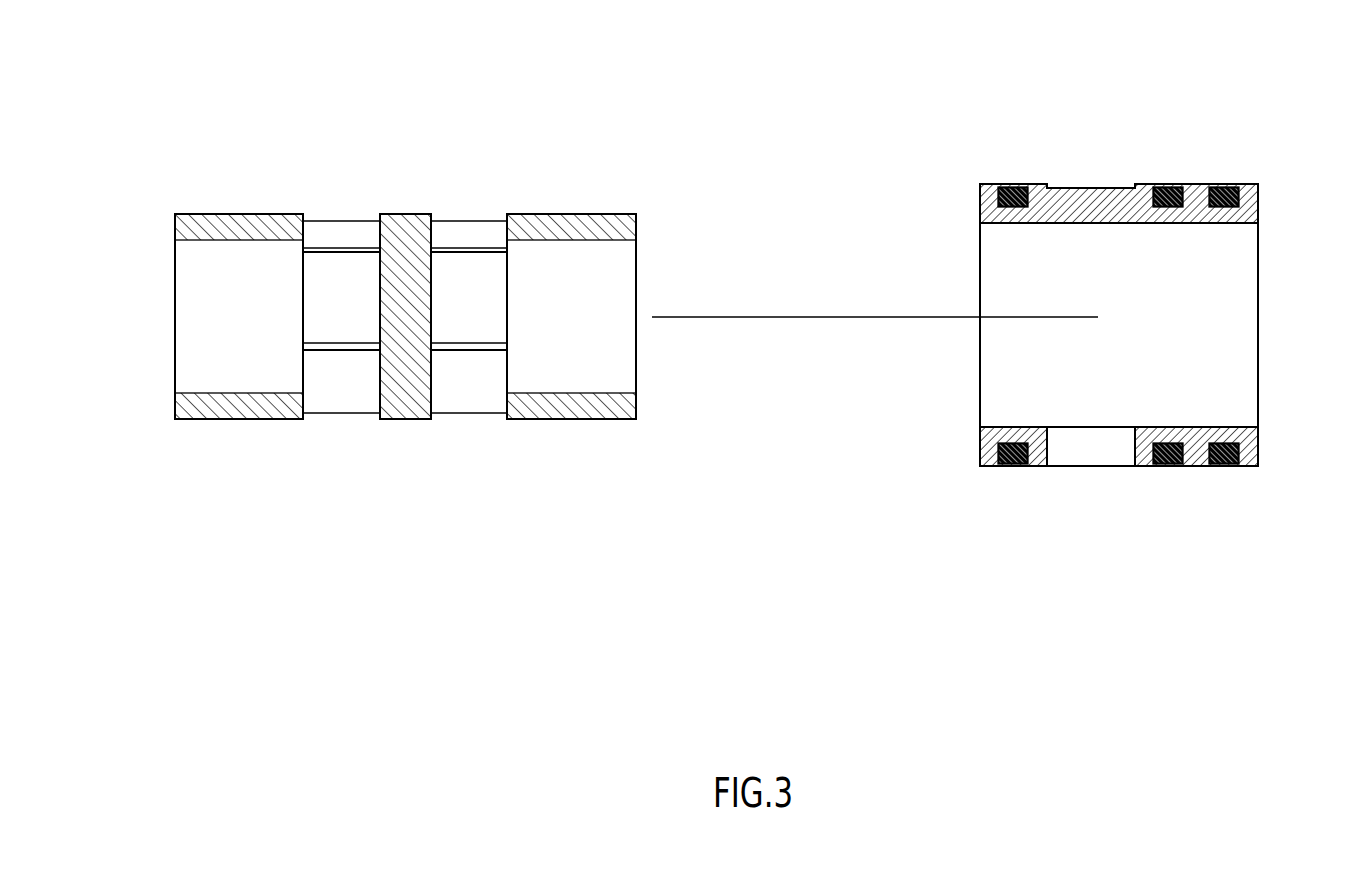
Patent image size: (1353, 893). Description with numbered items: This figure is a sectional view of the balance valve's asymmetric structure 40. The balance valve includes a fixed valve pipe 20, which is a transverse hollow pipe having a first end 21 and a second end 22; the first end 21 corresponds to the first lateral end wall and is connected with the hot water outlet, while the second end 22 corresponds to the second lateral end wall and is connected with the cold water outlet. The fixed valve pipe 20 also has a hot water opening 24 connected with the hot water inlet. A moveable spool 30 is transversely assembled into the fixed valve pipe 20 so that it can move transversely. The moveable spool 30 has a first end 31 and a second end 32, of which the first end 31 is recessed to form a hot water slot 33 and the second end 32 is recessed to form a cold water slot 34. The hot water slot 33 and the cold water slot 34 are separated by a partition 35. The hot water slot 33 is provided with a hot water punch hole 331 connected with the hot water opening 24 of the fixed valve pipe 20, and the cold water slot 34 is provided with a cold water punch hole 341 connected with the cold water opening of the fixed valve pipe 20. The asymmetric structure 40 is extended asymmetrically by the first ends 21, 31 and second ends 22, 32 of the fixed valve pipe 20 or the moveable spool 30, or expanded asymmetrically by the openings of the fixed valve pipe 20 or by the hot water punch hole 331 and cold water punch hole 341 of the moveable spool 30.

The fixed valve pipe 20 is at (1104, 192).
The first end 21 is at (980, 445).
The second end 22 is at (1258, 447).
The hot water opening 24 is at (1085, 453).
The moveable spool 30 is at (565, 220).
The first end 31 is at (176, 229).
The second end 32 is at (636, 225).
The hot water slot 33 is at (198, 360).
The cold water slot 34 is at (606, 373).
The partition 35 is at (400, 397).
The hot water punch hole 331 is at (336, 400).
The cold water punch hole 341 is at (470, 398).
The asymmetric structure 40 is at (410, 100).